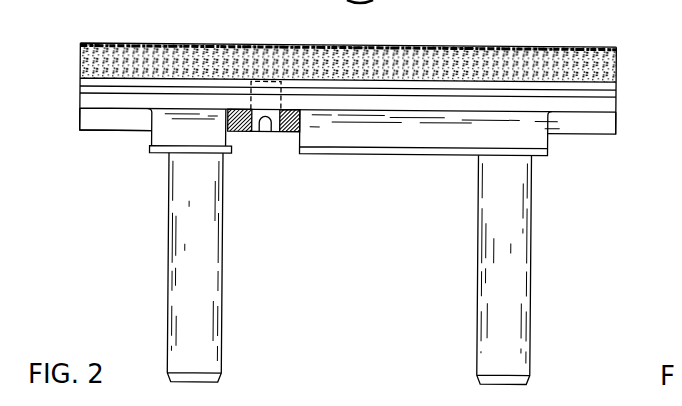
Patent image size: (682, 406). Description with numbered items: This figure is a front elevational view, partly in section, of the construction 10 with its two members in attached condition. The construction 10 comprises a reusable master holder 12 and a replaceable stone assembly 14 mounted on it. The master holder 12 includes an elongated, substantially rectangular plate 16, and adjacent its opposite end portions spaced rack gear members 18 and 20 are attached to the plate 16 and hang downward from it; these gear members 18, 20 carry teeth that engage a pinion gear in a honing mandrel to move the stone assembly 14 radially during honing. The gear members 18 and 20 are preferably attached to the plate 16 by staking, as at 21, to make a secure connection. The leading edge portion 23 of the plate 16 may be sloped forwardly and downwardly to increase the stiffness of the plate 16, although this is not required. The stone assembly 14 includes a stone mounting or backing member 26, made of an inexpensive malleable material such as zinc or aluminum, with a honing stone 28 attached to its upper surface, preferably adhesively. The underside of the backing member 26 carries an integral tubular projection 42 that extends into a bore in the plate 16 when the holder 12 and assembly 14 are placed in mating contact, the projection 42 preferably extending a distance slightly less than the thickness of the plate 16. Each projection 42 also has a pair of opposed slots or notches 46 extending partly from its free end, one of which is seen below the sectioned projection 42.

The construction 10 is at (118, 238).
The master holder 12 is at (585, 133).
The stone assembly 14 is at (80, 78).
The plate 16 is at (105, 122).
The rack gear member 18 is at (222, 264).
The rack gear member 20 is at (530, 273).
The staking 21 is at (376, 398).
The leading edge portion 23 is at (433, 149).
The backing member 26 is at (618, 91).
The honing stone 28 is at (618, 55).
The tubular projection 42 is at (248, 105).
The slot 46 is at (266, 133).